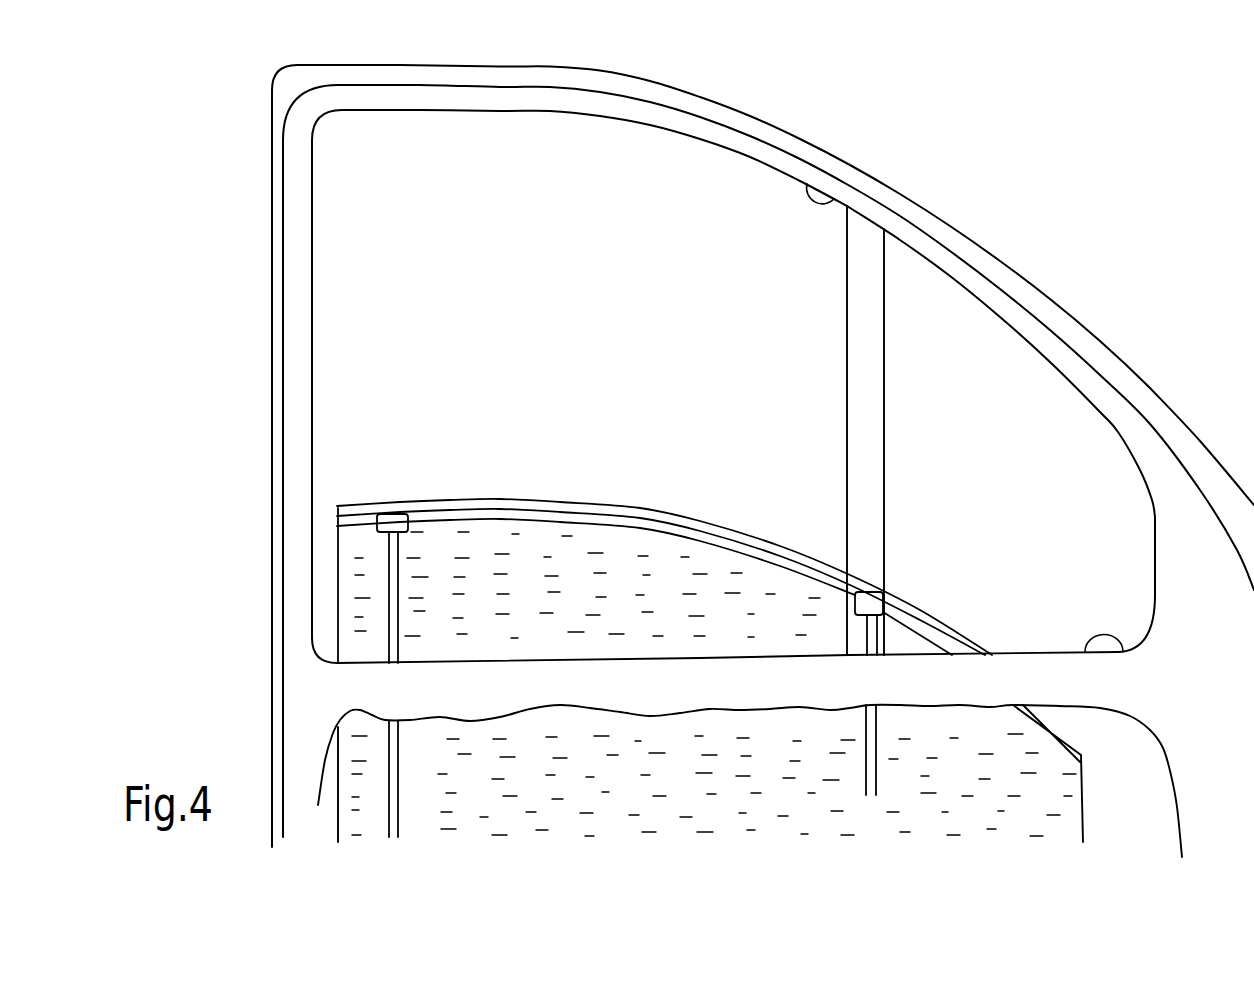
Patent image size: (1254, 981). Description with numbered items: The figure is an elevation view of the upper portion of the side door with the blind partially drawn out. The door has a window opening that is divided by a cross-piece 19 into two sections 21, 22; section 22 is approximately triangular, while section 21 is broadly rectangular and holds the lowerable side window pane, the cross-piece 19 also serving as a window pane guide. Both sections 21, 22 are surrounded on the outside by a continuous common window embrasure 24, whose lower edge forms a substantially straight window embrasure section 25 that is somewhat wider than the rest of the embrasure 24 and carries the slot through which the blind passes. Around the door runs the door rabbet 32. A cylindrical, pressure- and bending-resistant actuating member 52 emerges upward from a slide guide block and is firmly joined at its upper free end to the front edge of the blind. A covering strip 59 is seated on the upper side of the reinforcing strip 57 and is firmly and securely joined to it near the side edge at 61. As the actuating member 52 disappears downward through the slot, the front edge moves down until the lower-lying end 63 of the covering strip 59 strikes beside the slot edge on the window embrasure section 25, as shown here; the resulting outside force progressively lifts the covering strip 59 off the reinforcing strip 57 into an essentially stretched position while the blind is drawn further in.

The cross-piece 19 is at (868, 423).
The section 21 is at (607, 339).
The section 22 is at (1047, 470).
The window embrasure 24 is at (837, 200).
The window embrasure section 25 is at (1123, 651).
The door rabbet 32 is at (290, 87).
The actuating member 52 is at (400, 817).
The reinforcing strip 57 is at (547, 520).
The covering strip 59 is at (677, 520).
The joining point 61 is at (362, 498).
The lower-lying end 63 is at (992, 650).